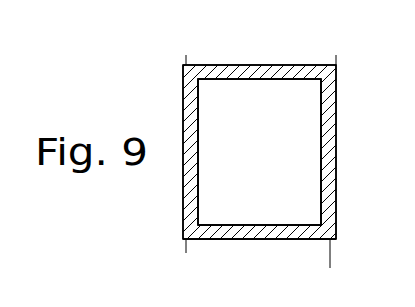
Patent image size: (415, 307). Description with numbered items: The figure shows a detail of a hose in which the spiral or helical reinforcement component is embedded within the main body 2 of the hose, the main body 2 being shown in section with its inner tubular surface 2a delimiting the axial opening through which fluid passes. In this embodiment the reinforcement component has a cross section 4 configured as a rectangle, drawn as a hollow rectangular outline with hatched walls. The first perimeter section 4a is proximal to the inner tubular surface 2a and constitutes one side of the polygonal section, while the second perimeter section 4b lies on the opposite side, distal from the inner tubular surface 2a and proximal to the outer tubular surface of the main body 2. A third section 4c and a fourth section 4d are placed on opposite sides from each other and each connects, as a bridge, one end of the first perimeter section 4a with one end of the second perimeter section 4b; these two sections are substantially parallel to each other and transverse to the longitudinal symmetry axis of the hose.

The main body 2 is at (327, 80).
The inner tubular surface 2a is at (224, 239).
The cross section 4 is at (318, 117).
The first perimeter section 4a is at (262, 230).
The second perimeter section 4b is at (231, 85).
The third section 4c is at (202, 98).
The fourth section 4d is at (311, 192).